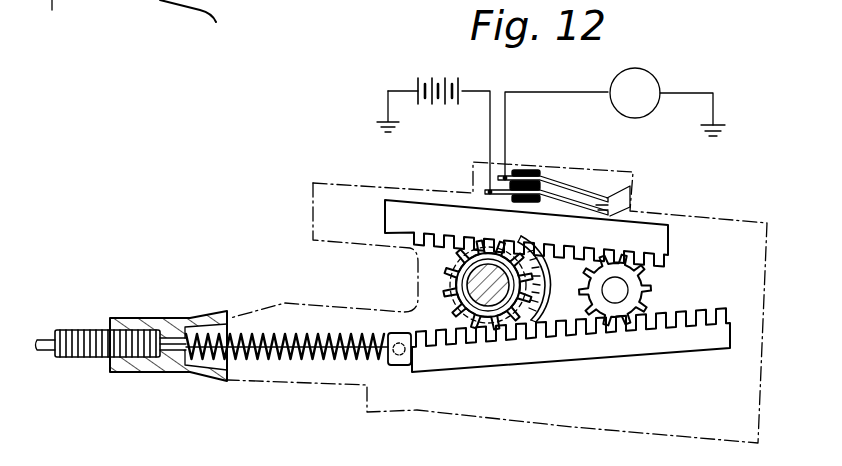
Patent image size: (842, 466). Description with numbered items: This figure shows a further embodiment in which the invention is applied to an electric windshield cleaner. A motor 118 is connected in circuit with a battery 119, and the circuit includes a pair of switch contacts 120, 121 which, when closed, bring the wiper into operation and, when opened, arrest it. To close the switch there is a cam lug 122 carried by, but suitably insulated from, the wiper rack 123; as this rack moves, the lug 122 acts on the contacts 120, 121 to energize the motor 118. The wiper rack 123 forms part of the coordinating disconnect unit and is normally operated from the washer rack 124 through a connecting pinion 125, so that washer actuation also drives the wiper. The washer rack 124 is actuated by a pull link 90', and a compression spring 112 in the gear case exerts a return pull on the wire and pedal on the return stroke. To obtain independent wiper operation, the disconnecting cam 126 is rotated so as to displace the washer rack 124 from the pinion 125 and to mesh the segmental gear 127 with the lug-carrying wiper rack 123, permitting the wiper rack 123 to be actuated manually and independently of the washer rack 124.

The pull link 90' is at (111, 322).
The compression spring 112 is at (290, 338).
The motor 118 is at (635, 110).
The battery 119 is at (432, 100).
The switch contact 120 is at (612, 200).
The switch contact 121 is at (620, 213).
The cam lug 122 is at (526, 200).
The wiper rack 123 is at (526, 233).
The washer rack 124 is at (571, 340).
The connecting pinion 125 is at (655, 292).
The disconnecting cam 126 is at (538, 283).
The segmental gear 127 is at (443, 282).